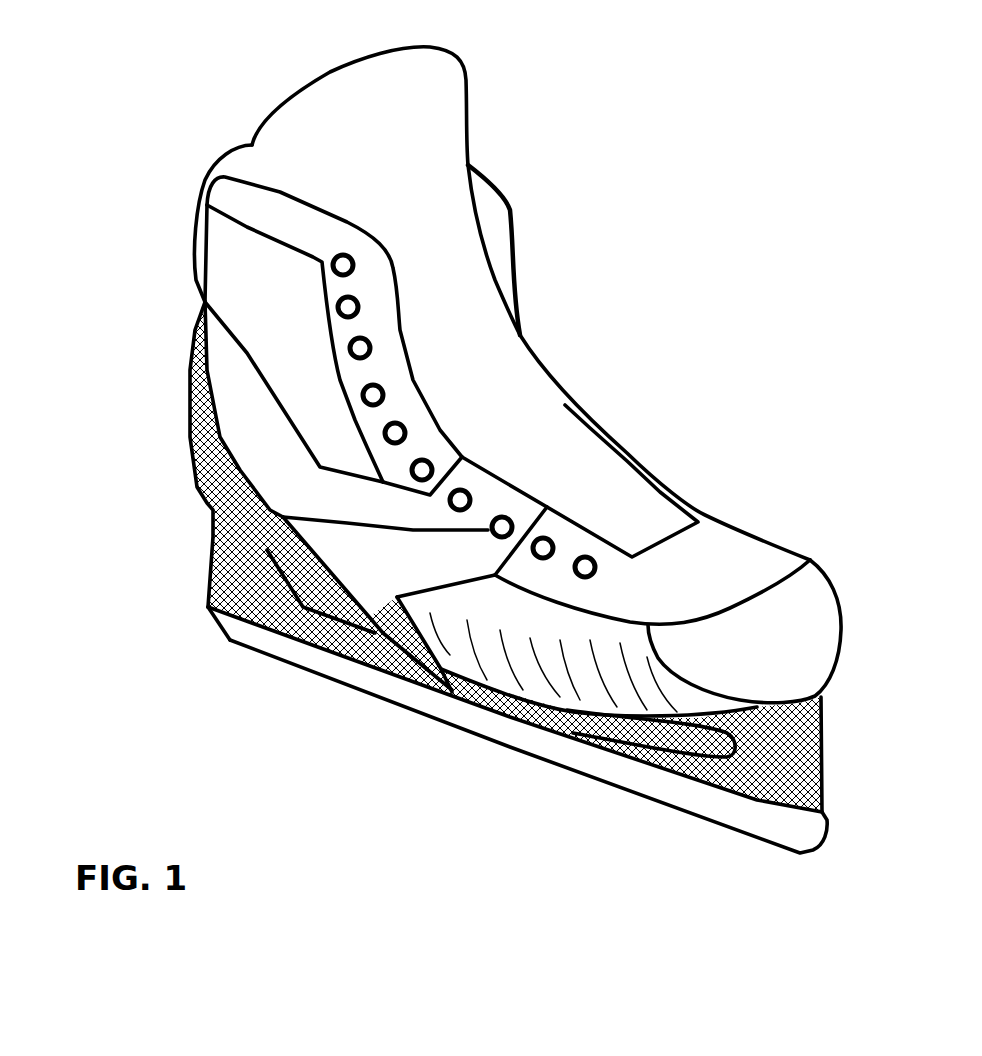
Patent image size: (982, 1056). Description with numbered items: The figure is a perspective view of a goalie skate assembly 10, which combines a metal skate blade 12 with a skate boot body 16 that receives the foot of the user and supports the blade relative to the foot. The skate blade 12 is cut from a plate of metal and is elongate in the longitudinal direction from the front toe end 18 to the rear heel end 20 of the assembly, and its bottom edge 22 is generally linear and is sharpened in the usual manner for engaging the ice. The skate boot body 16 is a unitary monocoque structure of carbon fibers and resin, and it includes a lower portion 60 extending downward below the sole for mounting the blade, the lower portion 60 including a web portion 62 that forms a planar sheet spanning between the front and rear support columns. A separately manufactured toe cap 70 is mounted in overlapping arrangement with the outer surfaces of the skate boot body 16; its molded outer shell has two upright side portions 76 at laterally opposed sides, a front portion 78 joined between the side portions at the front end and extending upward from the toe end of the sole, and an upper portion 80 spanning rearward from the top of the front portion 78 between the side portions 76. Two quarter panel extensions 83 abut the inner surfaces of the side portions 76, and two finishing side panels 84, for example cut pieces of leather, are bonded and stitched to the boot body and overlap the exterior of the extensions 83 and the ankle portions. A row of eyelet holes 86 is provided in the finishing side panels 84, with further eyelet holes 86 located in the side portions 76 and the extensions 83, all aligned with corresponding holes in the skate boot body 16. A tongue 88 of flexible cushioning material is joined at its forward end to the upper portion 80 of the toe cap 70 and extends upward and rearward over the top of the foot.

The goalie skate assembly 10 is at (646, 40).
The skate blade 12 is at (268, 645).
The skate boot body 16 is at (78, 424).
The front toe end 18 is at (841, 504).
The rear heel end 20 is at (156, 528).
The bottom edge 22 is at (482, 737).
The lower portion 60 is at (205, 574).
The web portion 62 is at (337, 607).
The toe cap 70 is at (761, 500).
The side portions 76 is at (577, 683).
The front portion 78 is at (812, 602).
The upper portion 80 is at (712, 543).
The quarter panel extensions 83 is at (380, 597).
The finishing side panels 84 is at (250, 300).
The eyelet holes 86 is at (547, 536).
The tongue 88 is at (450, 116).